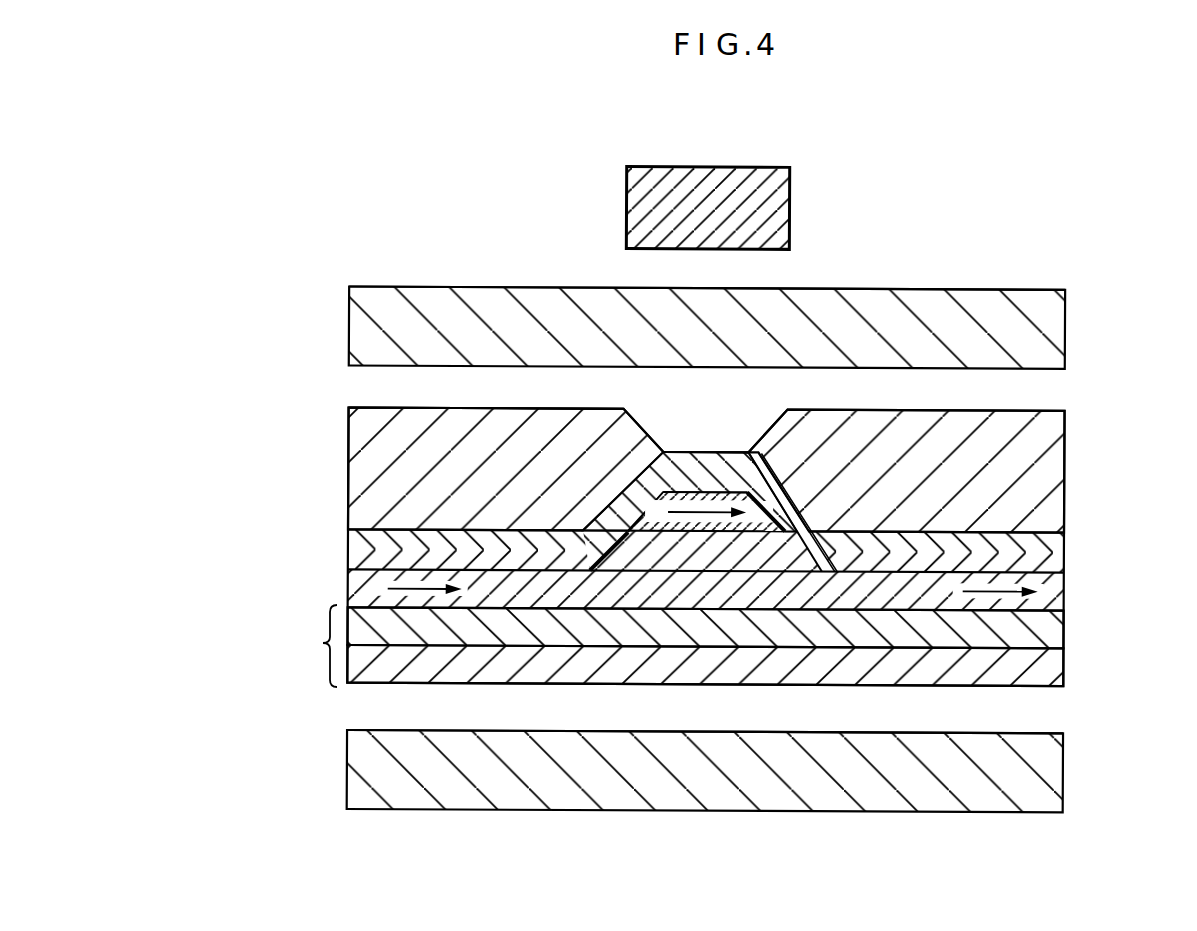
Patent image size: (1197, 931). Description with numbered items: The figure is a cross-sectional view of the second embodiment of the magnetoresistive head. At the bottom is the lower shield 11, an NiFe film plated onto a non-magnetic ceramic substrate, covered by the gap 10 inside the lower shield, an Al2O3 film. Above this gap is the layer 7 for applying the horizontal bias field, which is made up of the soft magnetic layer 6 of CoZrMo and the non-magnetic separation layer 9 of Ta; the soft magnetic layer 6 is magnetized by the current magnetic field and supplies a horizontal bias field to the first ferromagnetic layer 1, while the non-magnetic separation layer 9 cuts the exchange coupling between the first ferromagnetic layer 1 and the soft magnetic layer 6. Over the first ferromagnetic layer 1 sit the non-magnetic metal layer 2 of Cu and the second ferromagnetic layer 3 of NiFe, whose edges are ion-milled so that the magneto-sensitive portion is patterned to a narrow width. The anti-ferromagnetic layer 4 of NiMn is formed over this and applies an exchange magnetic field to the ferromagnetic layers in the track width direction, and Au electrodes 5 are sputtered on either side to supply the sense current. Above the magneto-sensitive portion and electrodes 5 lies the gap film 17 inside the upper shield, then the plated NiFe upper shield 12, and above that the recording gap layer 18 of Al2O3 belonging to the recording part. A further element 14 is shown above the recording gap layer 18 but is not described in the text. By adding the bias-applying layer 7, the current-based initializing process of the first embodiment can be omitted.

The first ferromagnetic layer 1 is at (1058, 590).
The non-magnetic metal layer 2 is at (654, 557).
The second ferromagnetic layer 3 is at (735, 525).
The anti-ferromagnetic layer 4 is at (1058, 553).
The electrodes 5 is at (355, 485).
The soft magnetic layer 6 is at (1058, 667).
The layer for applying the horizontal bias field 7 is at (666, 647).
The non-magnetic separation layer 9 is at (1058, 628).
The gap inside the lower shield 10 is at (363, 708).
The lower shield 11 is at (1067, 770).
The upper shield 12 is at (1067, 333).
The permanent magnet 14 is at (747, 167).
The gap film inside the upper shield 17 is at (365, 382).
The recording gap layer 18 is at (633, 273).